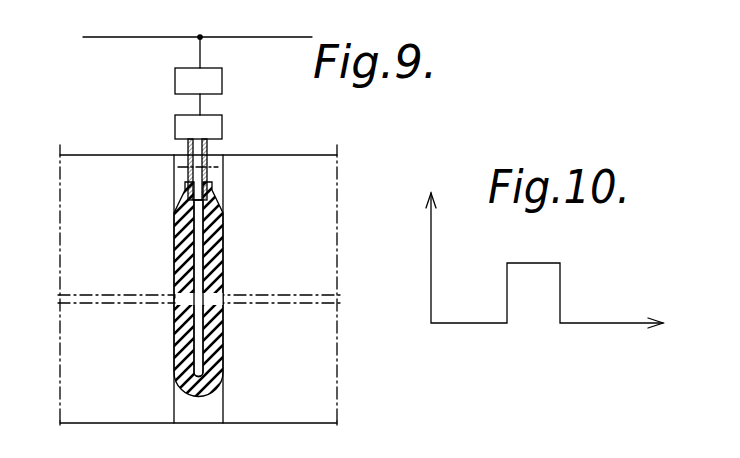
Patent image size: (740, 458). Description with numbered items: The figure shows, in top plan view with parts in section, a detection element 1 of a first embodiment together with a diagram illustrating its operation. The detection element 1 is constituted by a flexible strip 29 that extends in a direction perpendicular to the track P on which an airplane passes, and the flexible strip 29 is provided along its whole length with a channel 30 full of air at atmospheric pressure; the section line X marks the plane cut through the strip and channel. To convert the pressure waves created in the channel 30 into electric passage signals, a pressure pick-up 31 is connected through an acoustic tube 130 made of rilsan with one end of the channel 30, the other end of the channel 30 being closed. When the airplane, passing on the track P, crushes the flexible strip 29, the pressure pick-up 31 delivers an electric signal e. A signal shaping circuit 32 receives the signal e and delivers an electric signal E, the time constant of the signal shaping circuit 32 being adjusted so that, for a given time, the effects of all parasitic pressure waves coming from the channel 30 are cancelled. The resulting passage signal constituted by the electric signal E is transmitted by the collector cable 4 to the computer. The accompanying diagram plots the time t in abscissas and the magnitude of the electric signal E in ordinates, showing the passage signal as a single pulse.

In FIG. 9, the collector cable 4 is at (263, 36).
In FIG. 9, the electric signal E is at (203, 51).
In FIG. 10, the electric signal E is at (442, 181).
In FIG. 9, the signal shaping circuit 32 is at (217, 76).
In FIG. 9, the electric signal e is at (203, 102).
In FIG. 9, the pressure pick-up 31 is at (217, 128).
In FIG. 9, the acoustic tube 130 is at (208, 147).
In FIG. 9, the track P is at (327, 180).
In FIG. 9, the section line X- X is at (203, 295).
In FIG. 9, the detection element 1 is at (225, 361).
In FIG. 9, the flexible strip 29 is at (218, 245).
In FIG. 9, the channel 30 is at (198, 271).
In FIG. 10, the time t is at (673, 309).